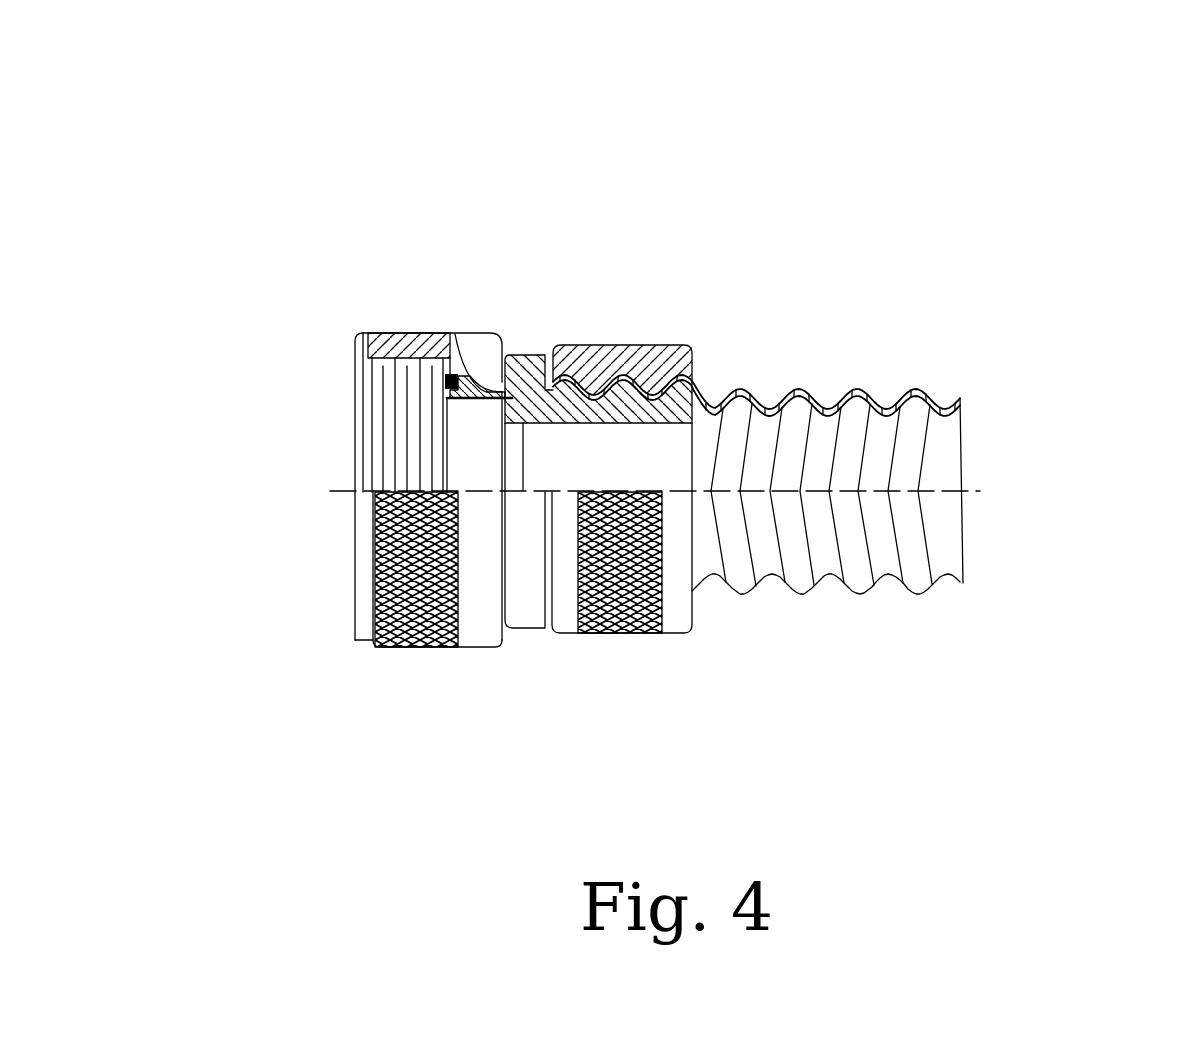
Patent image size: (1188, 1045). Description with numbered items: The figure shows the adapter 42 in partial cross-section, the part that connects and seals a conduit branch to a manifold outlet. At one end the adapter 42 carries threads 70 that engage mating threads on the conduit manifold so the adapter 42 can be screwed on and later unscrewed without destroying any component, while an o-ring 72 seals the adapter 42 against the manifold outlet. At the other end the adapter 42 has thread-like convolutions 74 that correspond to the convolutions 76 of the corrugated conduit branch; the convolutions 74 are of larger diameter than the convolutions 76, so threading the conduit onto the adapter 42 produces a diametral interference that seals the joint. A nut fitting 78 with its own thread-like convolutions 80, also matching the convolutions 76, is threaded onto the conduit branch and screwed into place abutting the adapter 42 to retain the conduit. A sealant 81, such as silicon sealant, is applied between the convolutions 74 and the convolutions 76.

The adapter 42 is at (495, 140).
The threads 70 is at (373, 360).
The o-ring 72 is at (447, 383).
The thread-like convolutions 74 is at (647, 402).
The convolutions 76 is at (985, 403).
The nut fitting 78 is at (619, 345).
The thread-like convolutions 80 is at (690, 370).
The sealant 81 is at (725, 385).